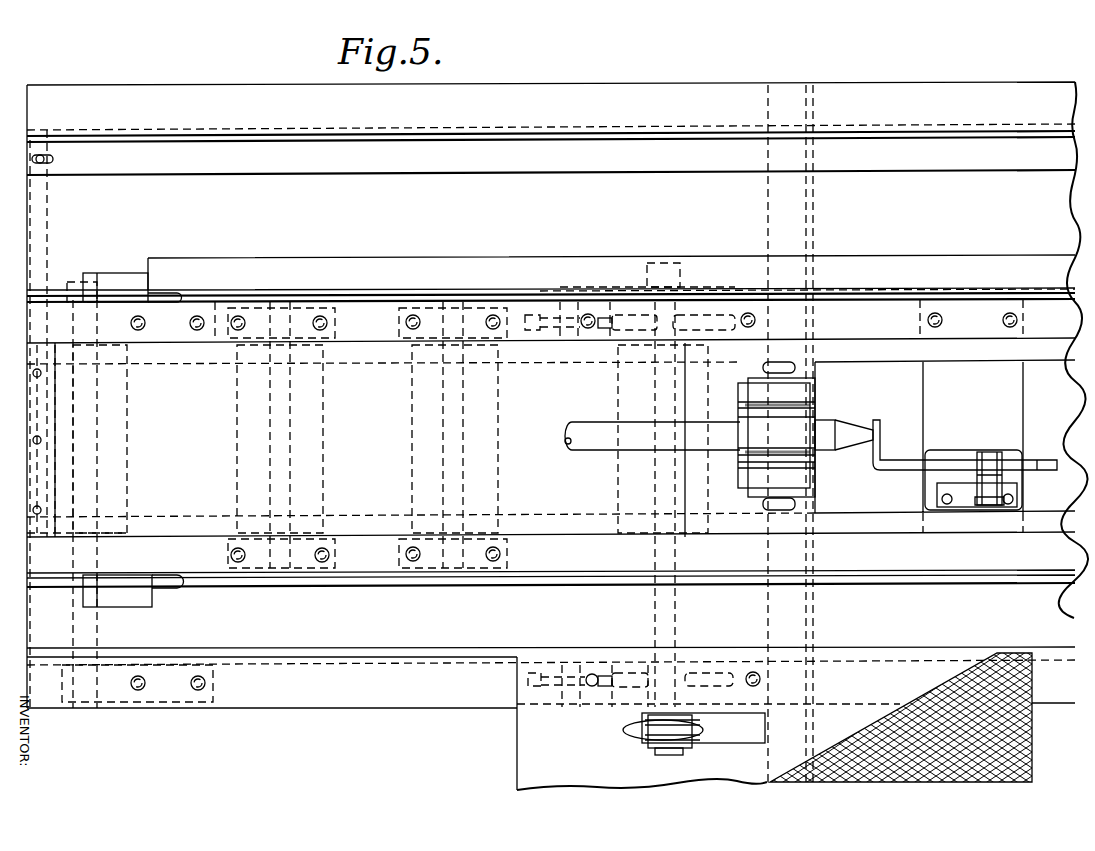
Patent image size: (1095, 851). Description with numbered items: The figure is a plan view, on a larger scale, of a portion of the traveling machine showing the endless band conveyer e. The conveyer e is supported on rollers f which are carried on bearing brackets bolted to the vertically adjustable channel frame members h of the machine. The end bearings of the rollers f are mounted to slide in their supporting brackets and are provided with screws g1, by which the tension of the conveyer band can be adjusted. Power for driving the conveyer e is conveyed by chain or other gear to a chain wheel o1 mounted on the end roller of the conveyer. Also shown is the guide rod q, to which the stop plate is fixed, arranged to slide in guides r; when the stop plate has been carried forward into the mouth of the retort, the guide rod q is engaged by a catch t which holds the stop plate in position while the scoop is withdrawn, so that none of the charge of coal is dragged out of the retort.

The endless band conveyer e is at (102, 439).
The rollers f is at (100, 452).
The screws g1 is at (540, 672).
The channel frame members h is at (362, 325).
The guide rod q is at (828, 428).
The guides r is at (788, 432).
The catch t is at (880, 430).
The chain wheel o1 is at (642, 735).